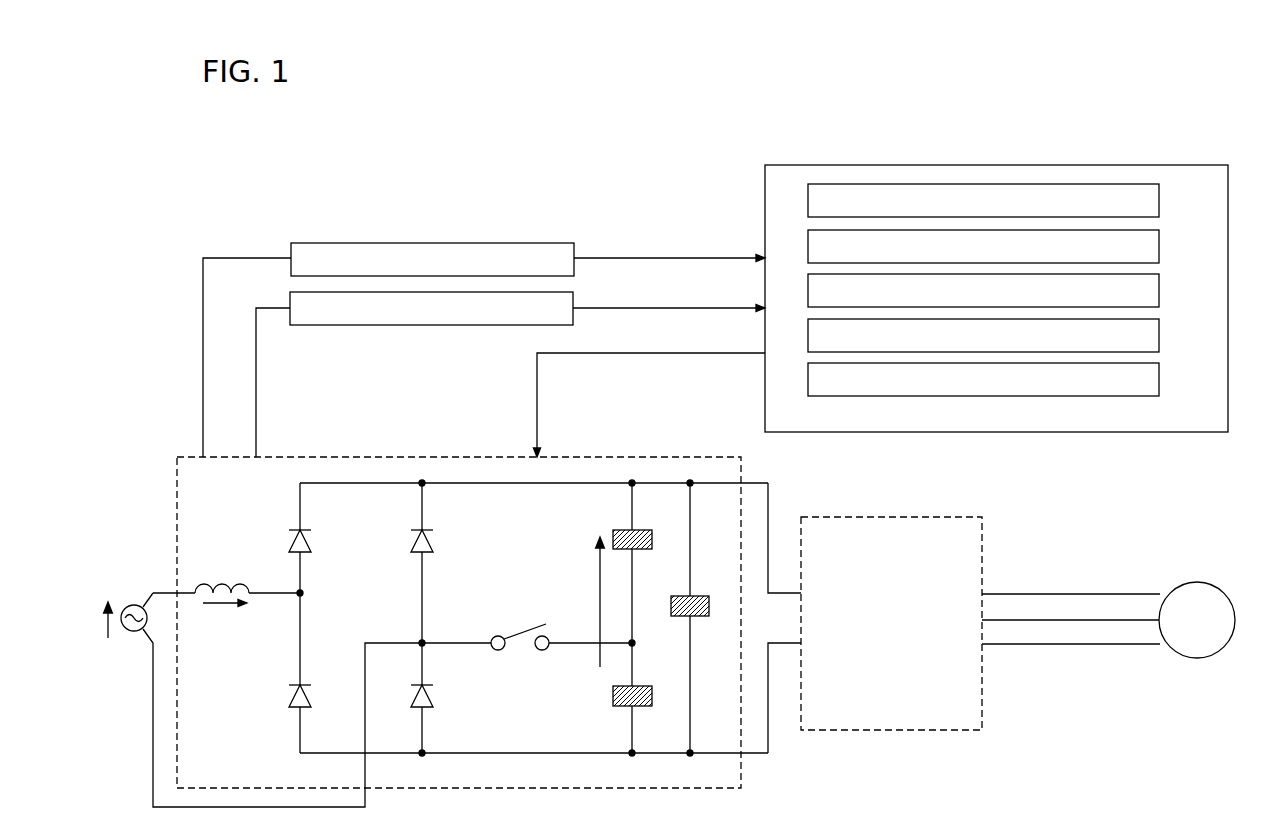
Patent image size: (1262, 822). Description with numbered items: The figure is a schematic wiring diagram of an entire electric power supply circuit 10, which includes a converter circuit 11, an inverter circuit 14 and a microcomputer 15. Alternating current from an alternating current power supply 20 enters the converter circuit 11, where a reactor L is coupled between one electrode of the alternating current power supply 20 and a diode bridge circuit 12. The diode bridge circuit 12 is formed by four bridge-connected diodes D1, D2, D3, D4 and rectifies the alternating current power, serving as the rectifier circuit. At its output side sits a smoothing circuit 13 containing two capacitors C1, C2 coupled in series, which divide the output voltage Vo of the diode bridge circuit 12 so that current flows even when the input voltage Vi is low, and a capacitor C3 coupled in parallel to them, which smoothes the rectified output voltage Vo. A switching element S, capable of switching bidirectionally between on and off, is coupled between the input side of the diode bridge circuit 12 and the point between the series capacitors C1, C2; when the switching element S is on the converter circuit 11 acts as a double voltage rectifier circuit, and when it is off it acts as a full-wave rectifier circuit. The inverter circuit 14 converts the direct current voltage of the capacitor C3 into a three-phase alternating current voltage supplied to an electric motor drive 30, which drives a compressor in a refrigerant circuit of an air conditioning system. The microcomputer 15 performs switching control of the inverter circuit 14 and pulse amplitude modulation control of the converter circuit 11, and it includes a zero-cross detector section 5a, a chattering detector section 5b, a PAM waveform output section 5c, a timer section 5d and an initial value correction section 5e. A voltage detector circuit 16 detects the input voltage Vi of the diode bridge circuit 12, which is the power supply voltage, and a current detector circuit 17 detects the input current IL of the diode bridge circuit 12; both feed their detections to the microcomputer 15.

The electric power supply circuit 10 is at (530, 133).
The converter circuit 11 is at (287, 457).
The diode bridge circuit 12 is at (361, 568).
The smoothing circuit 13 is at (675, 578).
The inverter circuit 14 is at (918, 517).
The microcomputer 15 is at (1008, 165).
The voltage detector circuit 16 is at (366, 243).
The current detector circuit 17 is at (362, 325).
The alternating current power supply 20 is at (136, 632).
The electric motor drive 30 is at (1192, 582).
The zero-cross detector section 5a is at (1160, 202).
The chattering detector section 5b is at (1160, 248).
The PAM waveform output section 5c is at (1160, 292).
The timer section 5d is at (1160, 337).
The initial value correction section 5e is at (1160, 381).
The reactor L is at (228, 580).
The diode D1 is at (312, 545).
The diode D2 is at (312, 706).
The diode D3 is at (414, 551).
The diode D4 is at (414, 706).
The switching element S is at (521, 632).
The capacitor C1 is at (648, 530).
The capacitor C2 is at (648, 706).
The capacitor C3 is at (705, 596).
The input voltage Vi is at (110, 605).
The input current IL is at (225, 616).
The output voltage Vo is at (584, 602).